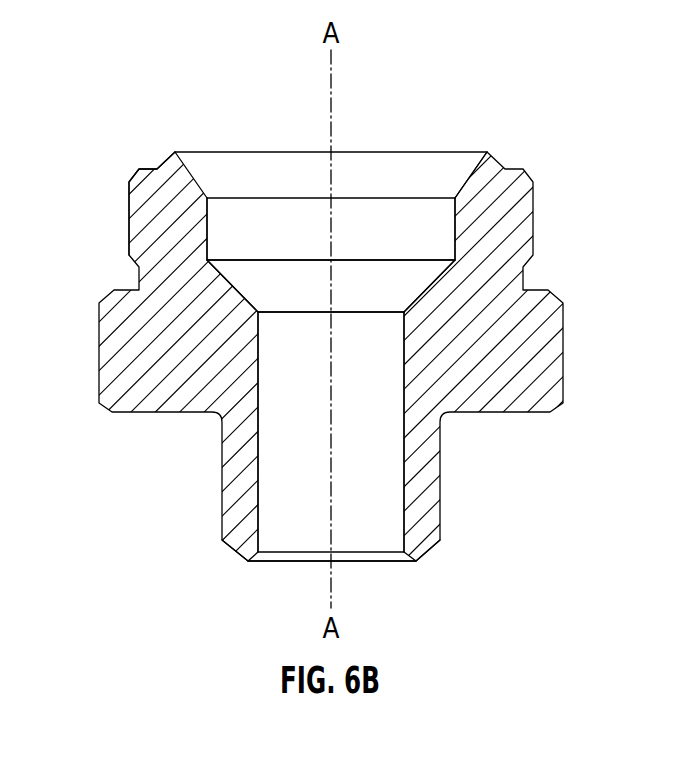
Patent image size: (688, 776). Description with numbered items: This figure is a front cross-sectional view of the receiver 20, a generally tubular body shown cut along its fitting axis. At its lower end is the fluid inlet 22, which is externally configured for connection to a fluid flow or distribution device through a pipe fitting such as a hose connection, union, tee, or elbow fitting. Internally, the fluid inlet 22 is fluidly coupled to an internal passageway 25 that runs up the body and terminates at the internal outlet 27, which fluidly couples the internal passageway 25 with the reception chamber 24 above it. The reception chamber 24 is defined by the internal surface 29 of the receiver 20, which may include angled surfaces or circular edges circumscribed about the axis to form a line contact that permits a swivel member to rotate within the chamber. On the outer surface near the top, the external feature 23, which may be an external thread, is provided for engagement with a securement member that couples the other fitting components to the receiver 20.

The receiver 20 is at (498, 93).
The fluid inlet 22 is at (278, 563).
The external feature 23 is at (131, 176).
The reception chamber 24 is at (263, 222).
The internal passageway 25 is at (308, 400).
The internal outlet 27 is at (310, 312).
The internal surface 29 is at (473, 165).